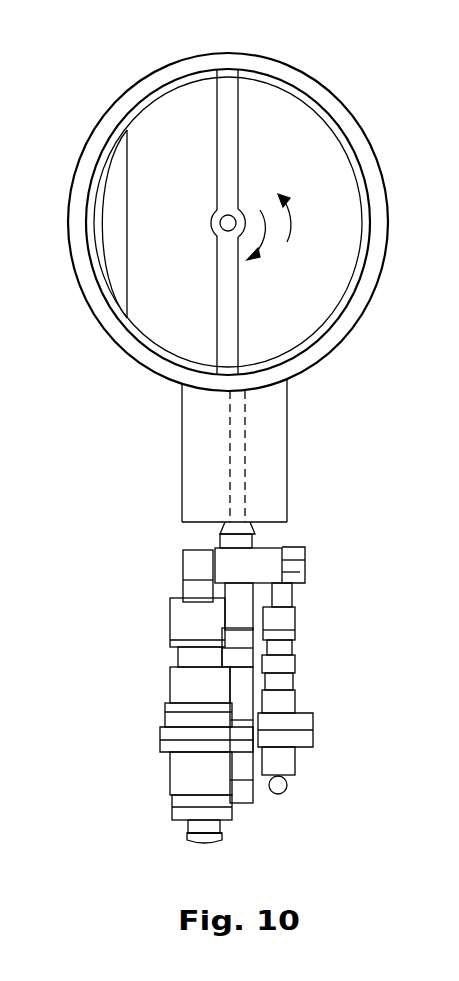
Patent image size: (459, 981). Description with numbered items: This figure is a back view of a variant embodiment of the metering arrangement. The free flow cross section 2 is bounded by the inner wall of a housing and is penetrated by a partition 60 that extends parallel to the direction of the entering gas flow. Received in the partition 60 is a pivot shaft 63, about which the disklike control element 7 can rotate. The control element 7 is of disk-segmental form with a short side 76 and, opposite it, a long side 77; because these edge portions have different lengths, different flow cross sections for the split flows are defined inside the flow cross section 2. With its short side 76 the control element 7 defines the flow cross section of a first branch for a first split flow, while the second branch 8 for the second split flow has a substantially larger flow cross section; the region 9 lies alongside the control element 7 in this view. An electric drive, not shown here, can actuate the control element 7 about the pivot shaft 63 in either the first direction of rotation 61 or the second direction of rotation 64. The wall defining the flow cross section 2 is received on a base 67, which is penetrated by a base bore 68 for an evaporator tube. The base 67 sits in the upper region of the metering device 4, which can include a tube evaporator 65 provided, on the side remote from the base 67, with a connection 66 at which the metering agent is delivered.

The free flow cross section 2 is at (325, 169).
The metering device 4 is at (310, 653).
The control element 7 is at (182, 100).
The branch B 8 is at (333, 262).
The flat segment 9 is at (113, 237).
The partition 60 is at (228, 173).
The first direction of rotation 61 is at (292, 213).
The pivot shaft 63 is at (226, 232).
The second direction of rotation 64 is at (268, 240).
The tube evaporator 65 is at (188, 540).
The connection 66 is at (188, 826).
The base 67 is at (206, 455).
The base bore 68 is at (240, 457).
The short side 76 is at (138, 206).
The long side 77 is at (221, 137).